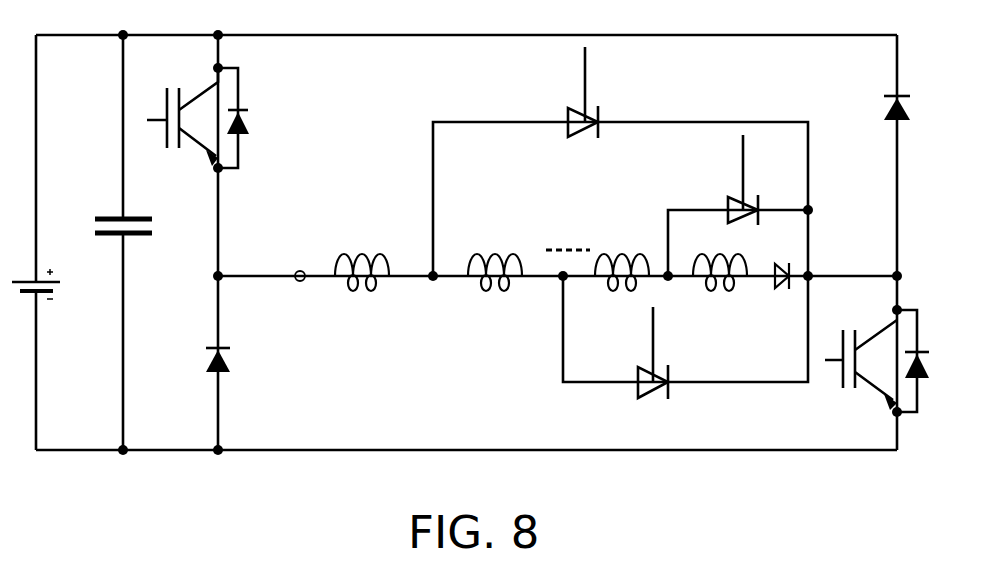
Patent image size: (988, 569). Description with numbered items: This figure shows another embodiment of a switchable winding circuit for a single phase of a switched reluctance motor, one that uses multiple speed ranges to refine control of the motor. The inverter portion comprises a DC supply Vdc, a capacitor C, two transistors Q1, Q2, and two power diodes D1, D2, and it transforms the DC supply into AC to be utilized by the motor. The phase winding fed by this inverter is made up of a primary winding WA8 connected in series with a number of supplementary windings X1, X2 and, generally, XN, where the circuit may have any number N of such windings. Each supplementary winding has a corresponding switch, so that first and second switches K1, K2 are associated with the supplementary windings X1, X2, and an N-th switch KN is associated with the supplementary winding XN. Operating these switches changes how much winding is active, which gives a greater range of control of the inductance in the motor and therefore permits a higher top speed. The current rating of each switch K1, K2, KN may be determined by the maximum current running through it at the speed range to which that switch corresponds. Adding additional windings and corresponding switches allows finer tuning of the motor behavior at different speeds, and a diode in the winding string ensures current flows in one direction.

The DC supply Vdc is at (47, 257).
The capacitor C is at (123, 242).
The transistor Q1 is at (216, 118).
The transistor Q2 is at (877, 372).
The power diode D1 is at (195, 384).
The power diode D2 is at (878, 95).
The switch KN is at (583, 110).
The switch K1 is at (733, 180).
The switch K2 is at (657, 368).
The primary winding WA8 is at (362, 288).
The supplementary winding XN is at (495, 289).
The supplementary winding X2 is at (622, 294).
The supplementary winding X1 is at (741, 291).